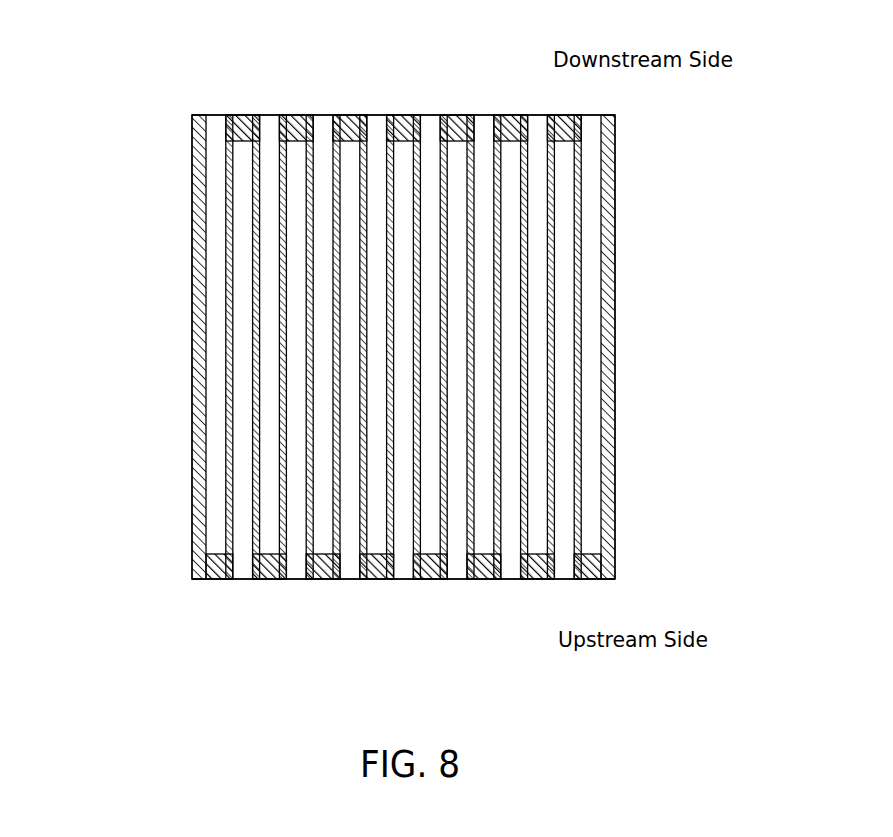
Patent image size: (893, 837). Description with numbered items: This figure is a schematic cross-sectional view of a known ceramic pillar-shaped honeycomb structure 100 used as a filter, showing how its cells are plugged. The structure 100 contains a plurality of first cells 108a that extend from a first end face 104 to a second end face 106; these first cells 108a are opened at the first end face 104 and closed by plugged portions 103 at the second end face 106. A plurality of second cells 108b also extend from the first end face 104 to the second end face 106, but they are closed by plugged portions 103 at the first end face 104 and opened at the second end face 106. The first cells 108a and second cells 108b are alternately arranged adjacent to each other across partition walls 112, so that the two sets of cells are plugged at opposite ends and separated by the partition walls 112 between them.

The honeycomb structure 100 is at (147, 172).
The plugged portions 103 is at (408, 114).
The first end face 104 is at (510, 585).
The second end face 106 is at (233, 102).
The first cells 108a is at (240, 580).
The second cells 108b is at (272, 115).
The partition walls 112 is at (229, 288).